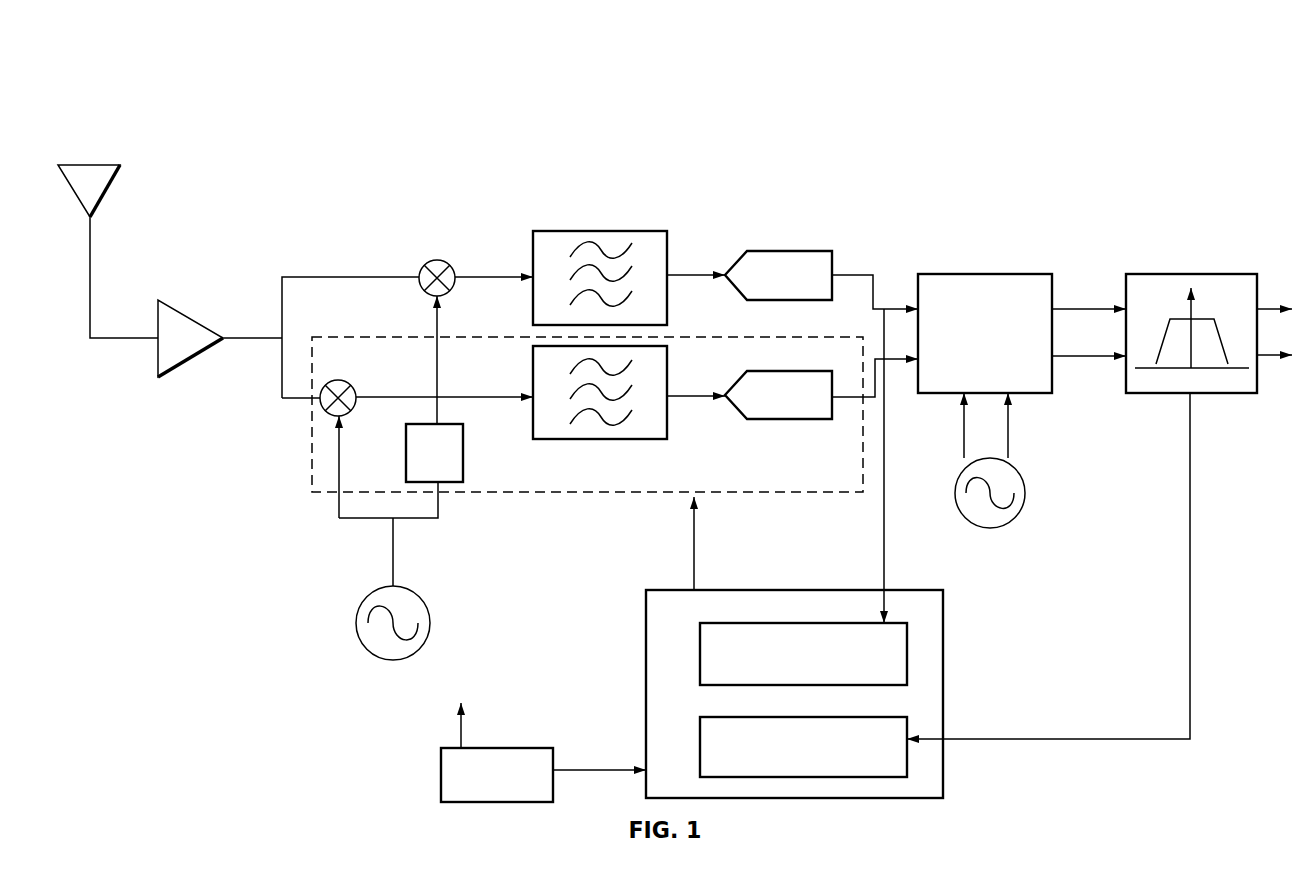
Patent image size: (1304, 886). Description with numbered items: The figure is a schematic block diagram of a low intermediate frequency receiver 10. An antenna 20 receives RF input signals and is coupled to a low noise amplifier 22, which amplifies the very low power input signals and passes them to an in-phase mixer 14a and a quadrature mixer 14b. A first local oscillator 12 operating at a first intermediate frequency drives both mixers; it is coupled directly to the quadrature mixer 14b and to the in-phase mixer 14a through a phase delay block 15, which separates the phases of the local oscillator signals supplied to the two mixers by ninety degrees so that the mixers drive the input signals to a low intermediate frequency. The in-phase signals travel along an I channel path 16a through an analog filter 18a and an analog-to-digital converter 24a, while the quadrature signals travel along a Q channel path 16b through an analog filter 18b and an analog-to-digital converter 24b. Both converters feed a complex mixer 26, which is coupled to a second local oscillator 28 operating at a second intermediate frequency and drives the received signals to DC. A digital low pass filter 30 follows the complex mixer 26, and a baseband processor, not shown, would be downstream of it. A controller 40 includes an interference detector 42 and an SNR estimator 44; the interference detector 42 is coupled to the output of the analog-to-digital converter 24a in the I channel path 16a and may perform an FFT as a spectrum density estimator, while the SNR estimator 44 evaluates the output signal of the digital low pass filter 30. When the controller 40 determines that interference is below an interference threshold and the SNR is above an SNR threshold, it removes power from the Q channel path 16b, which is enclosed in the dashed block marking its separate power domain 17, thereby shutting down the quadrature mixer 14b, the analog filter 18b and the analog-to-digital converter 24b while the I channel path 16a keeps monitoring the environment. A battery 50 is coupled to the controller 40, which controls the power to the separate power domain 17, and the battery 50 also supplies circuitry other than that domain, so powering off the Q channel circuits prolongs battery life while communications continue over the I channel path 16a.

The receiver 10 is at (340, 103).
The first local oscillator 12 is at (356, 625).
The in-phase mixer 14a is at (431, 261).
The quadrature mixer 14b is at (320, 405).
The phase delay block 15 is at (457, 482).
The I channel path 16a is at (282, 300).
The Q channel path 16b is at (282, 358).
The separate power domain 17 is at (312, 476).
The analog filter 18a is at (557, 231).
The analog filter 18b is at (533, 439).
The antenna 20 is at (107, 165).
The low noise amplifier 22 is at (188, 300).
The analog-to-digital converter 24a is at (782, 251).
The analog-to-digital converter 24b is at (819, 419).
The complex mixer 26 is at (1003, 274).
The second local oscillator 28 is at (1025, 500).
The digital low pass filter 30 is at (1178, 274).
The controller 40 is at (943, 615).
The interference detector 42 is at (907, 665).
The SNR estimator 44 is at (907, 762).
The battery 50 is at (440, 781).